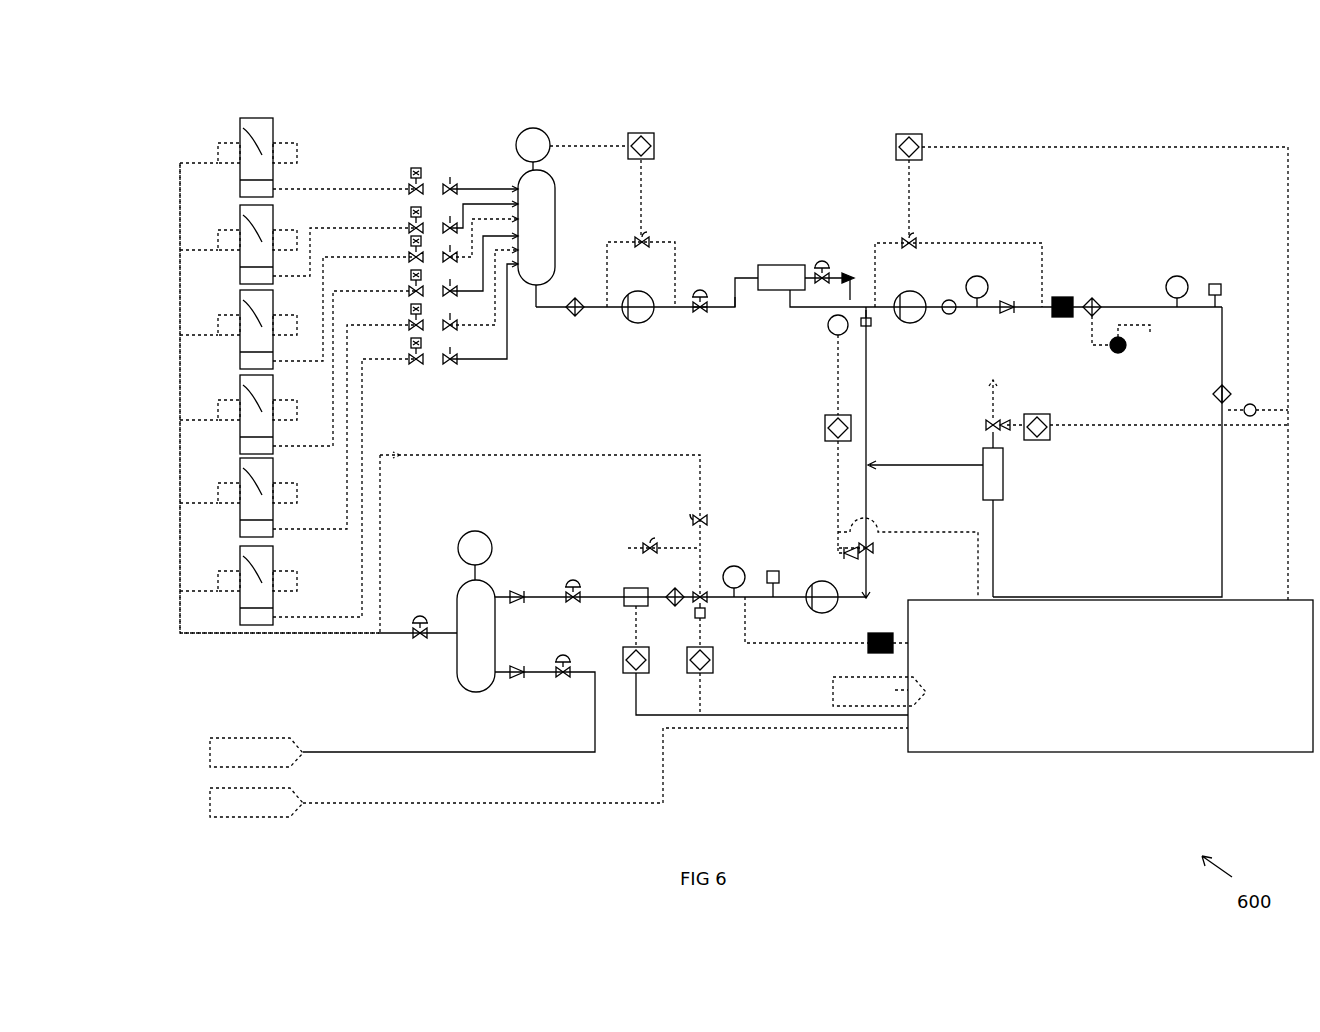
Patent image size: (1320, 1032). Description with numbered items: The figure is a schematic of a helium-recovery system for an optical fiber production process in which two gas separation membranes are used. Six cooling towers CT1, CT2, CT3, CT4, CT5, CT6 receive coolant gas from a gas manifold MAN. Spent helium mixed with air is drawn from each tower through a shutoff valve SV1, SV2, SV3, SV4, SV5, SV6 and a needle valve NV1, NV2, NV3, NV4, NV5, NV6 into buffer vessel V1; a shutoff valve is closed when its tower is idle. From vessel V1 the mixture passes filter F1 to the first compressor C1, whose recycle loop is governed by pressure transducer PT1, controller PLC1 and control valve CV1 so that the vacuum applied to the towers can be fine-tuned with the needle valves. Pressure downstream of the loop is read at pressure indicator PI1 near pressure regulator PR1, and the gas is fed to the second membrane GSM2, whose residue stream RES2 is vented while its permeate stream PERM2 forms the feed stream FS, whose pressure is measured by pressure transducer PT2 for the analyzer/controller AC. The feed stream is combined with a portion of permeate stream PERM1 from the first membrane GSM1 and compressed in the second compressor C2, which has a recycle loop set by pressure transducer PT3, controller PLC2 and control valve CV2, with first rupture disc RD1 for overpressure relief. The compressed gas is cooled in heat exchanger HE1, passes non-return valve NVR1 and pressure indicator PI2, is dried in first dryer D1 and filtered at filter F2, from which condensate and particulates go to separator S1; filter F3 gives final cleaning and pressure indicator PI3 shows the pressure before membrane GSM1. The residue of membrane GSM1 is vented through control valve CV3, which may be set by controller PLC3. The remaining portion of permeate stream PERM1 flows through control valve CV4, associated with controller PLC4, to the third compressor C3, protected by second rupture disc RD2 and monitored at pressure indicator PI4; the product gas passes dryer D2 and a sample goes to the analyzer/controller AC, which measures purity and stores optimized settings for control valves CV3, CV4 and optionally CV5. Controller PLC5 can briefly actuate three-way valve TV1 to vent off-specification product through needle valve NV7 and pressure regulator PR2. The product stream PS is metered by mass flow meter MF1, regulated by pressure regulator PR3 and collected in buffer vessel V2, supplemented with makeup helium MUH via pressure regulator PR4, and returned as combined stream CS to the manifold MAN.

The cooling tower CT1 is at (240, 130).
The cooling tower CT2 is at (240, 217).
The cooling tower CT3 is at (240, 303).
The cooling tower CT4 is at (240, 388).
The cooling tower CT5 is at (240, 472).
The cooling tower CT6 is at (240, 560).
The gas manifold MAN is at (178, 368).
The shutoff valve SV1 is at (412, 172).
The shutoff valve SV2 is at (413, 213).
The shutoff valve SV3 is at (413, 243).
The shutoff valve SV4 is at (413, 276).
The shutoff valve SV5 is at (410, 311).
The shutoff valve SV6 is at (412, 345).
The needle valve NV1 is at (450, 178).
The needle valve NV2 is at (450, 215).
The needle valve NV3 is at (448, 245).
The needle valve NV4 is at (455, 285).
The needle valve NV5 is at (455, 320).
The needle valve NV6 is at (455, 355).
The needle valve NV7 is at (648, 542).
The buffer vessel V1 is at (538, 212).
The buffer vessel V2 is at (468, 625).
The pressure transducer PT1 is at (538, 140).
The pressure transducer PT2 is at (830, 328).
The third pressure transducer PT3 is at (1253, 416).
The programmable logic controller PLC1 is at (643, 133).
The controller PLC2 is at (903, 135).
The controller PLC3 is at (1047, 425).
The controller PLC4 is at (830, 420).
The controller PLC5 is at (712, 660).
The first control valve CV1 is at (650, 235).
The second control valve CV2 is at (915, 235).
The third control valve CV3 is at (995, 417).
The fourth control valve CV4 is at (868, 556).
The control valve CV5 is at (822, 265).
The first gas separation membrane GSM1 is at (995, 478).
The second gas separation membrane GSM2 is at (790, 272).
The first compressor C1 is at (632, 322).
The second compressor C2 is at (908, 295).
The third compressor C3 is at (815, 588).
The residue stream RES2 is at (850, 295).
The feed stream FS is at (866, 315).
The pressure indicator PI1 is at (695, 293).
The pressure indicator 2 PI2 is at (978, 265).
The third pressure indicator PI3 is at (1176, 265).
The fourth pressure indicator PI4 is at (736, 560).
The first dryer D1 is at (1061, 296).
The dryer 2 D2 is at (885, 632).
The filter F1 is at (578, 318).
The filter F2 is at (1093, 298).
The filter F3 is at (1226, 388).
The first rupture disc RD1 is at (1218, 284).
The second rupture disc RD2 is at (772, 570).
The permeate stream PERM1 is at (885, 473).
The permeate stream PERM2 is at (735, 310).
The pressure regulator 1 PR1 is at (705, 320).
The pressure regulator PR2 is at (702, 512).
The pressure regulator PR3 is at (573, 590).
The pressure regulator PR4 is at (563, 682).
The heat exchanger HE1 is at (948, 316).
The non-return valve 1 NVR1 is at (1003, 315).
The separator S1 is at (1122, 352).
The three-way valve TV1 is at (702, 590).
The mass flow meter MF1 is at (634, 588).
The product stream PS is at (545, 560).
The combined stream CS is at (310, 635).
The high purity helium MUH is at (248, 752).
The analyzer/controller AC is at (1045, 628).